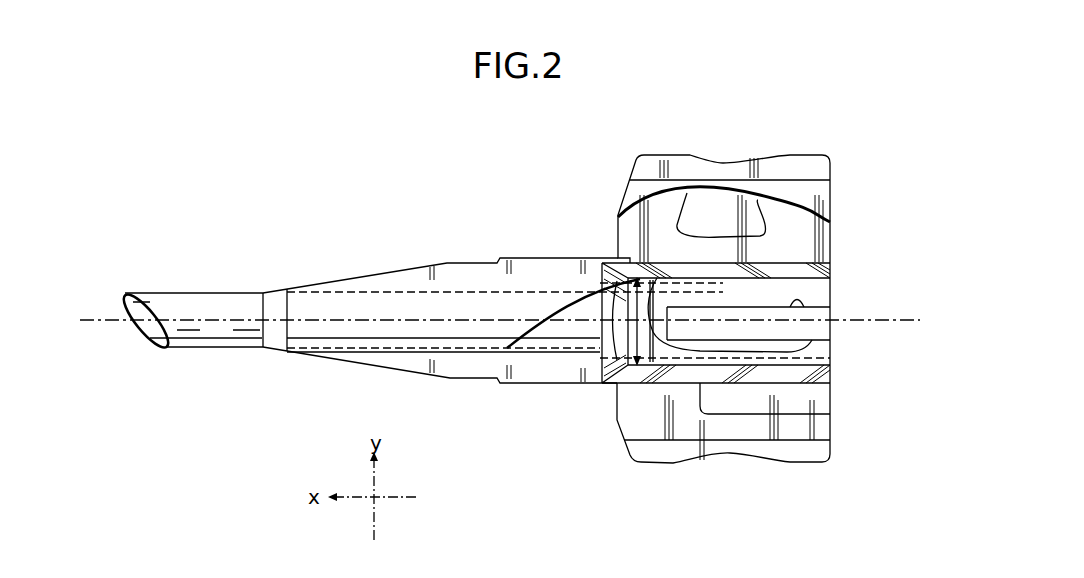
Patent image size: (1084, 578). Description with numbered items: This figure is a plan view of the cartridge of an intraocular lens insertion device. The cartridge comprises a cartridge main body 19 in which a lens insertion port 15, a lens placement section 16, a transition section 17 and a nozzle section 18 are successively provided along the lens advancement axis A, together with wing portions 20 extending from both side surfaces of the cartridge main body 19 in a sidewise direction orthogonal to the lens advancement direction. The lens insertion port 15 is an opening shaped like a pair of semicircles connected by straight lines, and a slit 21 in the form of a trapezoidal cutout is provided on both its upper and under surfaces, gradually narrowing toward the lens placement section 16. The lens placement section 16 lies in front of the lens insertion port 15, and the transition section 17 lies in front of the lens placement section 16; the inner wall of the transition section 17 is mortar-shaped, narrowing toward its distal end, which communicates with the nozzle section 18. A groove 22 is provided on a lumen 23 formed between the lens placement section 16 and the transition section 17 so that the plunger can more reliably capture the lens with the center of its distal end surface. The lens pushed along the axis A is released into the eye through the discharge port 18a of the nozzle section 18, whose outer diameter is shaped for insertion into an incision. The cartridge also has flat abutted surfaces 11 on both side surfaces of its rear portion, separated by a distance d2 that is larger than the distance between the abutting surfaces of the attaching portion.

The abutted surface 11 is at (670, 270).
The lens insertion port 15 is at (812, 315).
The lens placement section 16 is at (708, 319).
The transition section 17 is at (384, 312).
The nozzle section 18 is at (230, 305).
The discharge port 18a is at (132, 294).
The cartridge main body 19 is at (518, 395).
The wing portion 20 is at (818, 195).
The slit 21 is at (745, 330).
The groove 22 is at (805, 372).
The lumen 23 is at (567, 340).
The distance between abutted surfaces d2 is at (637, 362).
The lens advancement axis A is at (113, 326).